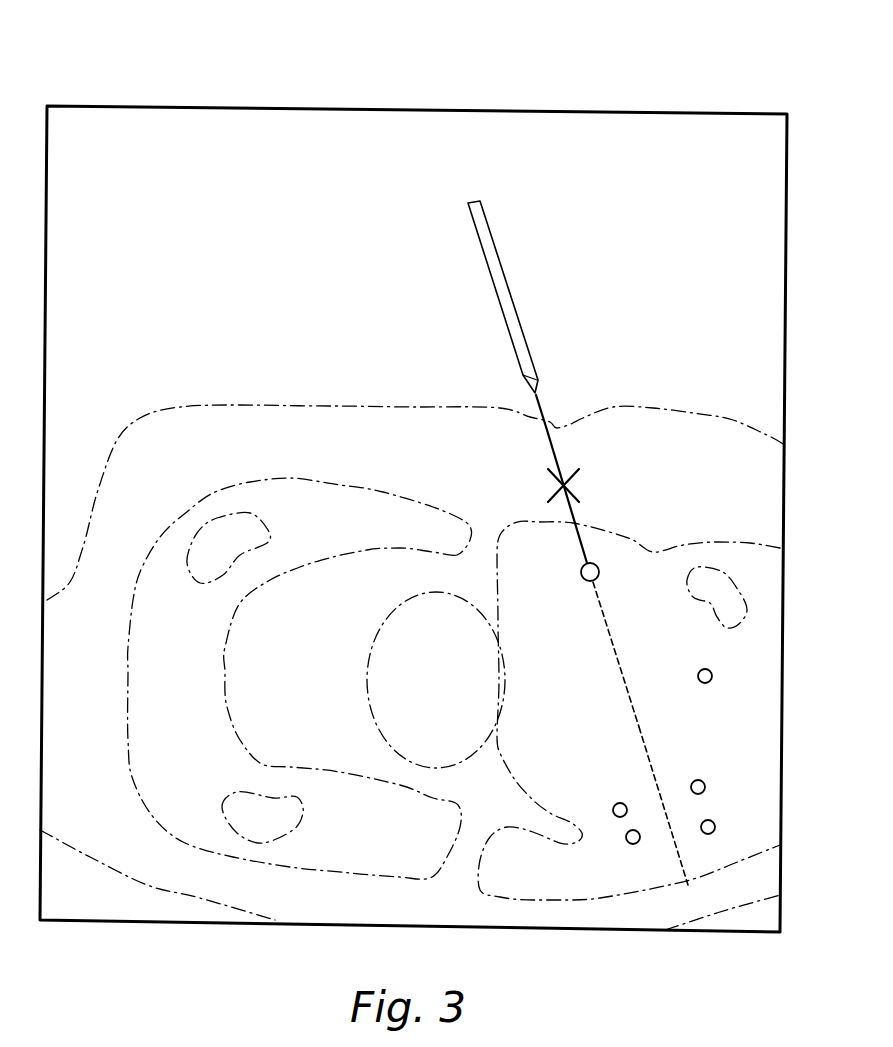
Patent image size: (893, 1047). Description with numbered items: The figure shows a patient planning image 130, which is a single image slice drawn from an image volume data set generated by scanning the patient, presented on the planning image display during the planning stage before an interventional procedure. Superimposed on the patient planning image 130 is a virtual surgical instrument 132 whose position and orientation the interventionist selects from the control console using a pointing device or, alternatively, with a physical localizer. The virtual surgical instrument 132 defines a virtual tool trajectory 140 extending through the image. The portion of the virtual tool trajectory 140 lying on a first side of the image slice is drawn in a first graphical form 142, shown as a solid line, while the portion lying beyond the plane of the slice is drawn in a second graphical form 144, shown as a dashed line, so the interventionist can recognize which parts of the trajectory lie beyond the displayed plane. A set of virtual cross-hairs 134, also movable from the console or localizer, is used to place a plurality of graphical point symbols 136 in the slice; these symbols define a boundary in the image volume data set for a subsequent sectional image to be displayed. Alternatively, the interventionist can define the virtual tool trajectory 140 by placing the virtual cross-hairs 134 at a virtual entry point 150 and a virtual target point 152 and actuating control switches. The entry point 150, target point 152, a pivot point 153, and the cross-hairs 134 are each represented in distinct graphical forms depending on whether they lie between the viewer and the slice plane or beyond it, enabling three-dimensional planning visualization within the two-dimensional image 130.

The patient planning image 130 is at (291, 98).
The virtual surgical instrument 132 is at (508, 290).
The virtual cross-hairs 134 is at (577, 473).
The graphical point symbols 136 is at (719, 800).
The virtual tool trajectory 140 is at (608, 627).
The first graphical form 142 is at (548, 448).
The second graphical form 144 is at (640, 727).
The virtual entry point 150 is at (553, 413).
The virtual target point 152 is at (600, 555).
The pivot point 153 is at (716, 672).